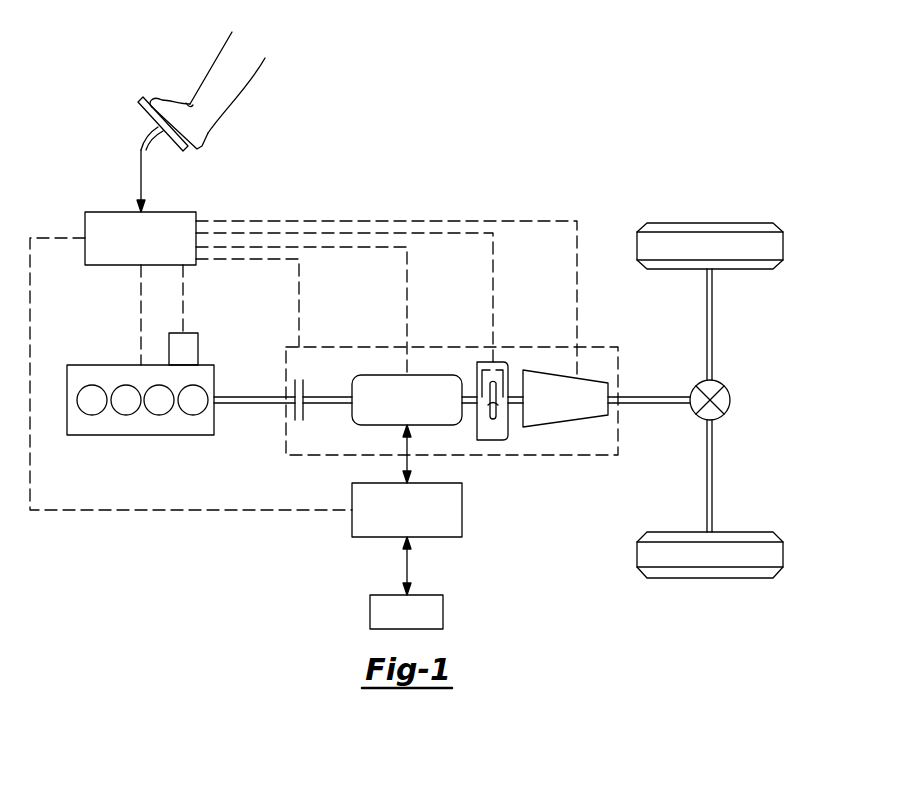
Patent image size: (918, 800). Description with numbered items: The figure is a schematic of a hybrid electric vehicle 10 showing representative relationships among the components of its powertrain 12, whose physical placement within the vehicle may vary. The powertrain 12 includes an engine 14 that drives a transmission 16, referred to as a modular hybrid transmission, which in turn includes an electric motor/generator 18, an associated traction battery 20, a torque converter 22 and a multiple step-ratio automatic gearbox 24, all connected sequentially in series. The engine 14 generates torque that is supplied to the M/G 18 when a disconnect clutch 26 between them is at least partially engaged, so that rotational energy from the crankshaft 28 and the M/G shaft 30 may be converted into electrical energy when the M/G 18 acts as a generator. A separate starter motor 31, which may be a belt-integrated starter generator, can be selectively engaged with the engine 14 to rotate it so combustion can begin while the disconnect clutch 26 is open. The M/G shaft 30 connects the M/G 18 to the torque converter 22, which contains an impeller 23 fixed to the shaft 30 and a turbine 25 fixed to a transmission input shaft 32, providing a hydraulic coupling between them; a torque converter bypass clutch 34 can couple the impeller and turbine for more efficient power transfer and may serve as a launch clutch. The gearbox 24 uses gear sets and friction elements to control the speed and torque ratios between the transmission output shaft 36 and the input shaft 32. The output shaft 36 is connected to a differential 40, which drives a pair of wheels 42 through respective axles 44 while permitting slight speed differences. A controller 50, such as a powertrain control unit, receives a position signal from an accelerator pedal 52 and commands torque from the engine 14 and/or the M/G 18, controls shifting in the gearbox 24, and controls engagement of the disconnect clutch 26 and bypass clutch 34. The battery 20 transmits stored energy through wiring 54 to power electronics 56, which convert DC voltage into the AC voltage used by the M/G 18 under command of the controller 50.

The hybrid electric vehicle 10 is at (592, 165).
The powertrain 12 is at (243, 546).
The engine 14 is at (83, 365).
The transmission 16 is at (440, 347).
The electric motor/generator 18 is at (388, 375).
The traction battery 20 is at (370, 612).
The torque converter 22 is at (488, 440).
The impeller 23 is at (500, 410).
The gearbox 24 is at (560, 427).
The turbine 25 is at (488, 410).
The disconnect clutch 26 is at (295, 415).
The crankshaft 28 is at (270, 397).
The M/G shaft 30 is at (332, 397).
The starter motor 31 is at (190, 333).
The transmission input shaft 32 is at (513, 397).
The torque converter bypass clutch 34 is at (493, 362).
The transmission output shaft 36 is at (662, 397).
The differential 40 is at (731, 400).
The wheels 42 is at (679, 223).
The axles 44 is at (712, 325).
The controller 50 is at (98, 212).
The accelerator pedal 52 is at (138, 110).
The wiring 54 is at (400, 566).
The power electronics 56 is at (462, 512).